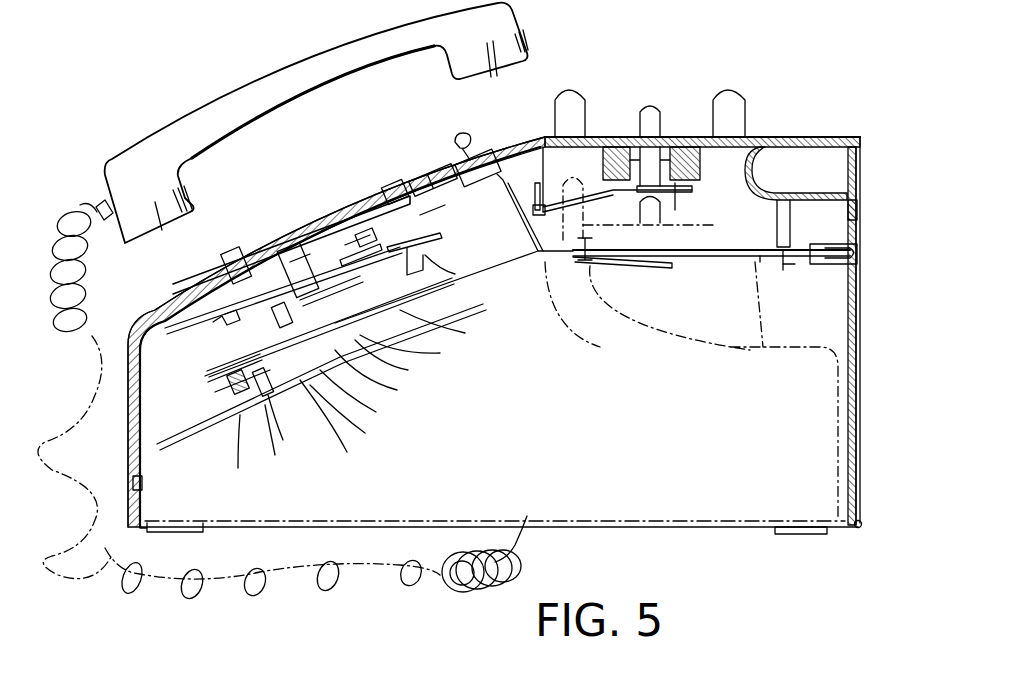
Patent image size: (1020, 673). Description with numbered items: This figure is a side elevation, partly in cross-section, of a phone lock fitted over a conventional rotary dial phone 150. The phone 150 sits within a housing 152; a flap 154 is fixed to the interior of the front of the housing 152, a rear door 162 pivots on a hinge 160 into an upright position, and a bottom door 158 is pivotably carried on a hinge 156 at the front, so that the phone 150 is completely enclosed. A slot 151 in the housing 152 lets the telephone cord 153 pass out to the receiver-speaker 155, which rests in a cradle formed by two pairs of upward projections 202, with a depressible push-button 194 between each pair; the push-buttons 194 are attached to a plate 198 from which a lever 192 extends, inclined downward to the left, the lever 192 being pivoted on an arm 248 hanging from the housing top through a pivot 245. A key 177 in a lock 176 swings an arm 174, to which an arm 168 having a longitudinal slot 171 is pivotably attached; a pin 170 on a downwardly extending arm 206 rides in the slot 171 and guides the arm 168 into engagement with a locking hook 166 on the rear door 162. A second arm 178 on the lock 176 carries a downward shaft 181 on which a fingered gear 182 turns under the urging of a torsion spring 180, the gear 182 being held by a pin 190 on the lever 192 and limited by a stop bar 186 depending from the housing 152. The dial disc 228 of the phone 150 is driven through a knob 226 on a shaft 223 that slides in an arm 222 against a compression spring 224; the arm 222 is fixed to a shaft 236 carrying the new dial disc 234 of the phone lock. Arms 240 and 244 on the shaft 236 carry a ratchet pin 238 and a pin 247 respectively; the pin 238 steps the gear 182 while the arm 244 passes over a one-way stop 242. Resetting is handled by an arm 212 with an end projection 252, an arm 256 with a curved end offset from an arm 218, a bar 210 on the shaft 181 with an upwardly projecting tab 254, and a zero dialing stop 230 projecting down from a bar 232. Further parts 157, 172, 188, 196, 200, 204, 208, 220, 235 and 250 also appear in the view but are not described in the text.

The phone 150 is at (200, 442).
The slot 151 is at (531, 512).
The housing 152 is at (152, 320).
The telephone cord 153 is at (88, 290).
The flap 154 is at (142, 482).
The receiver-speaker 155 is at (246, 98).
The hinge 156 is at (143, 529).
The switch block 157 is at (286, 245).
The bottom door 158 is at (680, 527).
The hinge 160 is at (862, 524).
The rear door 162 is at (862, 410).
The locking hook 166 is at (858, 258).
The arm 168 is at (748, 258).
The pin 170 is at (786, 264).
The longitudinal slot 171 is at (781, 264).
The leaf spring 172 is at (592, 268).
The arm 174 is at (545, 266).
The lock 176 is at (480, 150).
The key 177 is at (464, 131).
The arm 178 is at (428, 200).
The torsion spring 180 is at (420, 215).
The shaft 181 is at (455, 300).
The gear 182 is at (455, 274).
The stop bar 186 is at (335, 250).
The lower plate 188 is at (465, 333).
The pin 190 is at (430, 252).
The lever 192 is at (494, 224).
The push-button 194 is at (650, 108).
The coil core 196 is at (641, 210).
The plate 198 is at (676, 198).
The ringer pin 200 is at (723, 188).
The upward projections 202 is at (566, 98).
The clip recess 204 is at (858, 246).
The arm 206 is at (760, 234).
The gong mount 208 is at (845, 190).
The bar 210 is at (397, 390).
The arm 212 is at (365, 433).
The arm 218 is at (262, 344).
The key block 220 is at (270, 398).
The arm 222 is at (208, 378).
The shaft 223 is at (275, 455).
The compression spring 224 is at (225, 390).
The knob 226 is at (238, 468).
The dial disc 228 is at (408, 370).
The stop 230 is at (230, 332).
The bar 232 is at (214, 322).
The new dial disc 234 is at (200, 280).
The shaft block 235 is at (233, 249).
The shaft 236 is at (300, 256).
The pin 238 is at (440, 353).
The arm 240 is at (388, 183).
The one-way stop 242 is at (279, 320).
The arm 244 is at (320, 295).
The pivot 245 is at (584, 246).
The pin 247 is at (358, 230).
The arm 248 is at (548, 180).
The key stem 250 is at (283, 438).
The projection 252 is at (352, 230).
The tab 254 is at (376, 412).
The arm 256 is at (347, 452).